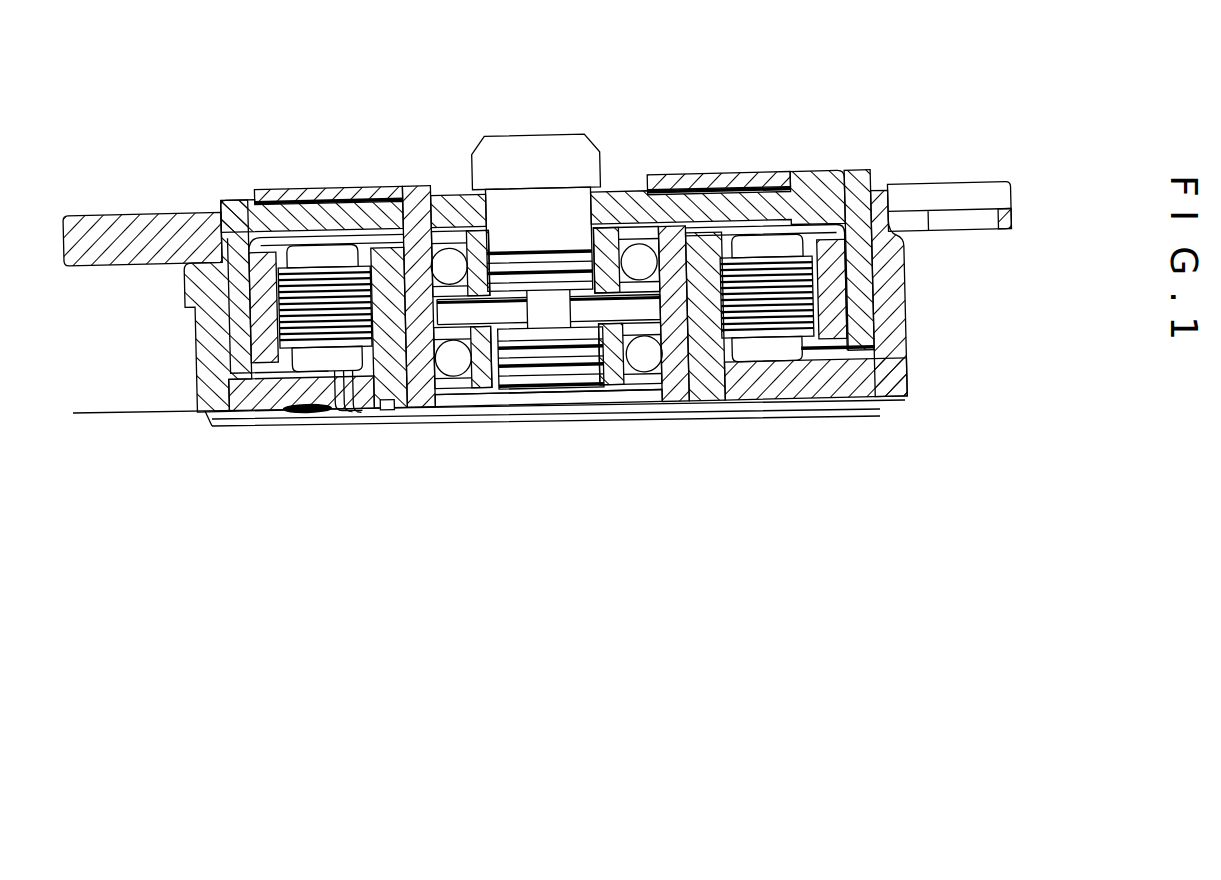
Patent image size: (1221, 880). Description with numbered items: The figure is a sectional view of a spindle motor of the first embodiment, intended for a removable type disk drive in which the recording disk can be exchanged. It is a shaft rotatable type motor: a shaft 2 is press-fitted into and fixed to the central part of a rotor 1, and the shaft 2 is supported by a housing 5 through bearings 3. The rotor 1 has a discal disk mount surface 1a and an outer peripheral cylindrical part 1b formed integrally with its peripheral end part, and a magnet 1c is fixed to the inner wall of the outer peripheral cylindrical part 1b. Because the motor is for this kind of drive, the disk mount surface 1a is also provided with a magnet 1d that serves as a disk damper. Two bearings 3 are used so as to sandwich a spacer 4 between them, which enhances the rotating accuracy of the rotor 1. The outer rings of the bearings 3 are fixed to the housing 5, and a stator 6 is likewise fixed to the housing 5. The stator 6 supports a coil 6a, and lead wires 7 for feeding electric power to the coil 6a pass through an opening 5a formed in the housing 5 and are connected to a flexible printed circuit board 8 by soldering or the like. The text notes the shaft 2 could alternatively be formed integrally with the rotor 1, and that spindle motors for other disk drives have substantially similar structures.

The rotor 1 is at (855, 185).
The disk mount surface 1a is at (823, 170).
The outer peripheral cylindrical part 1b is at (857, 272).
The magnet 1c is at (847, 306).
The magnet 1d is at (726, 175).
The shaft 2 is at (580, 165).
The bearings 3 is at (409, 188).
The spacer 4 is at (683, 312).
The housing 5 is at (913, 370).
The opening 5a is at (377, 412).
The stator 6 is at (768, 310).
The coil 6a is at (793, 345).
The lead wires 7 is at (336, 412).
The flexible printed circuit board 8 is at (165, 413).